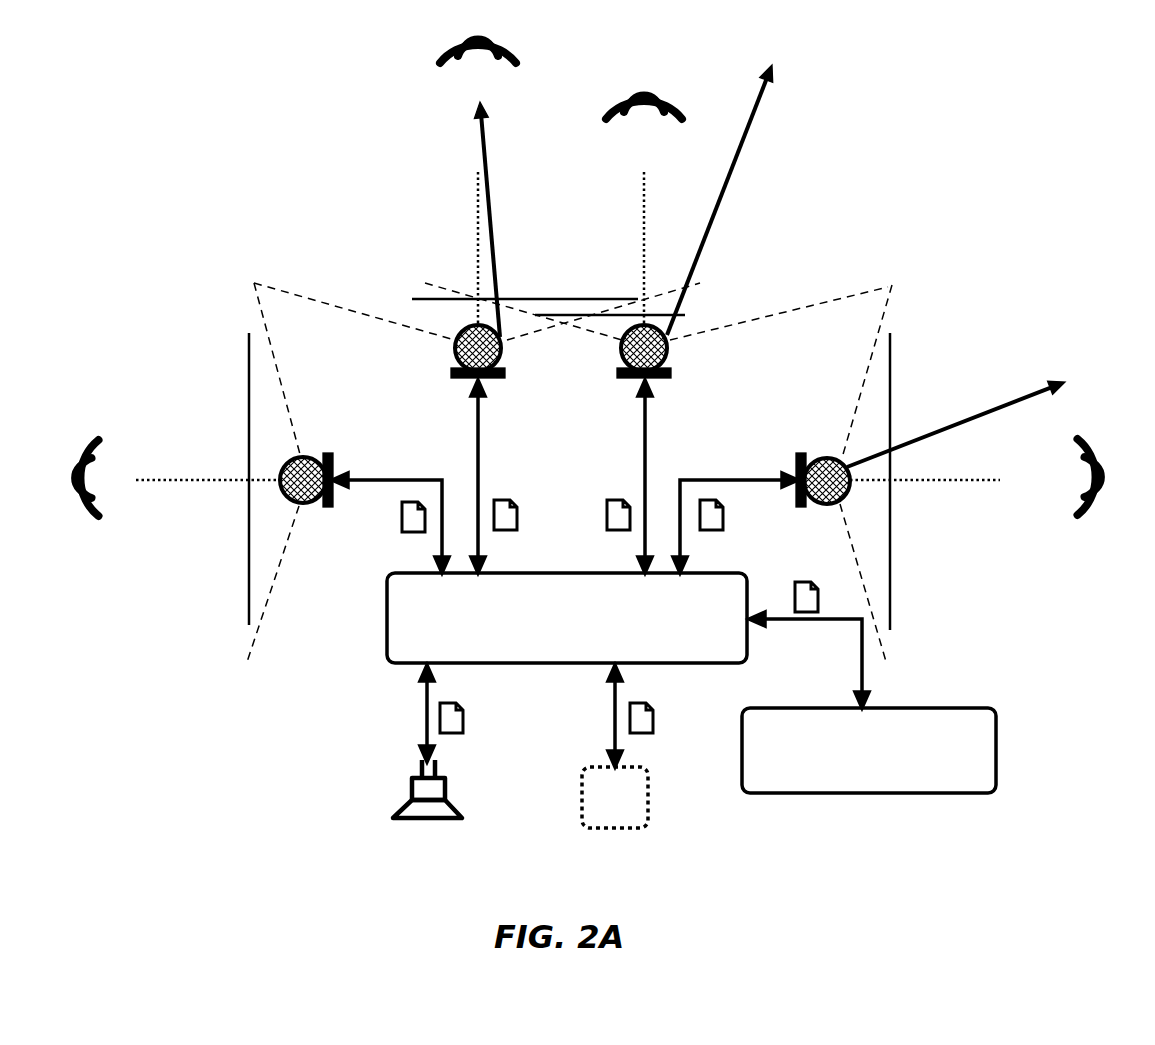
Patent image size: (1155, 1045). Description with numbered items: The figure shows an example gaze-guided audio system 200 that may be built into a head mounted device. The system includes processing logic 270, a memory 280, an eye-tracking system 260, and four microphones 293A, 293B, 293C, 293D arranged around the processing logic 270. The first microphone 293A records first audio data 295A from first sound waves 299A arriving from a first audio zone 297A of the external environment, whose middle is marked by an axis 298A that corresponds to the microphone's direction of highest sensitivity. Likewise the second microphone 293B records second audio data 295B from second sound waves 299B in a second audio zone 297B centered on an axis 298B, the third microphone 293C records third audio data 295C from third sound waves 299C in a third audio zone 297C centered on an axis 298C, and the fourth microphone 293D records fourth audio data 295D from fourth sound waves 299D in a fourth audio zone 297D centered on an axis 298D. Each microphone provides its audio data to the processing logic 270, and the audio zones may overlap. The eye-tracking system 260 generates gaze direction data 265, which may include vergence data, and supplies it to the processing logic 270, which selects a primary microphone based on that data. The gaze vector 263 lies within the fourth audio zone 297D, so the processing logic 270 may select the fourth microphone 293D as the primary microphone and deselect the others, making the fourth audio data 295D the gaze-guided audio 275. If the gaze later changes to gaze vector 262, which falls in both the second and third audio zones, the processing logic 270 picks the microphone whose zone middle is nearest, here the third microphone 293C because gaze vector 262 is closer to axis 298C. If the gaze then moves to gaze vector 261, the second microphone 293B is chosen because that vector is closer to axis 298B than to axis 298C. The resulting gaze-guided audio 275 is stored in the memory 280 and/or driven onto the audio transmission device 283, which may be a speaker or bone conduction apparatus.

The gaze-guided audio system 200 is at (1141, 50).
The eye-tracking system 260 is at (921, 775).
The gaze vector 261 is at (520, 219).
The gaze vector 262 is at (757, 190).
The gaze vector 263 is at (956, 404).
The gaze direction data 265 is at (819, 575).
The processing logic 270 is at (543, 645).
The gaze-guided audio 275 is at (580, 714).
The memory 280 is at (600, 824).
The audio transmission device 283 is at (396, 789).
The first microphone 293A is at (323, 450).
The second microphone 293B is at (436, 351).
The third microphone 293C is at (682, 353).
The fourth microphone 293D is at (797, 458).
The first audio data 295A is at (373, 529).
The second audio data 295B is at (523, 491).
The third audio data 295C is at (597, 476).
The fourth audio data 295D is at (747, 527).
The first audio zone 297A is at (250, 479).
The second audio zone 297B is at (323, 299).
The third audio zone 297C is at (758, 315).
The fourth audio zone 297D is at (897, 481).
The axis 298A is at (209, 455).
The axis 298B is at (438, 249).
The axis 298C is at (605, 249).
The axis 298D is at (925, 506).
The first sound waves 299A is at (75, 501).
The second sound waves 299B is at (440, 74).
The third sound waves 299C is at (676, 96).
The fourth sound waves 299D is at (1056, 502).